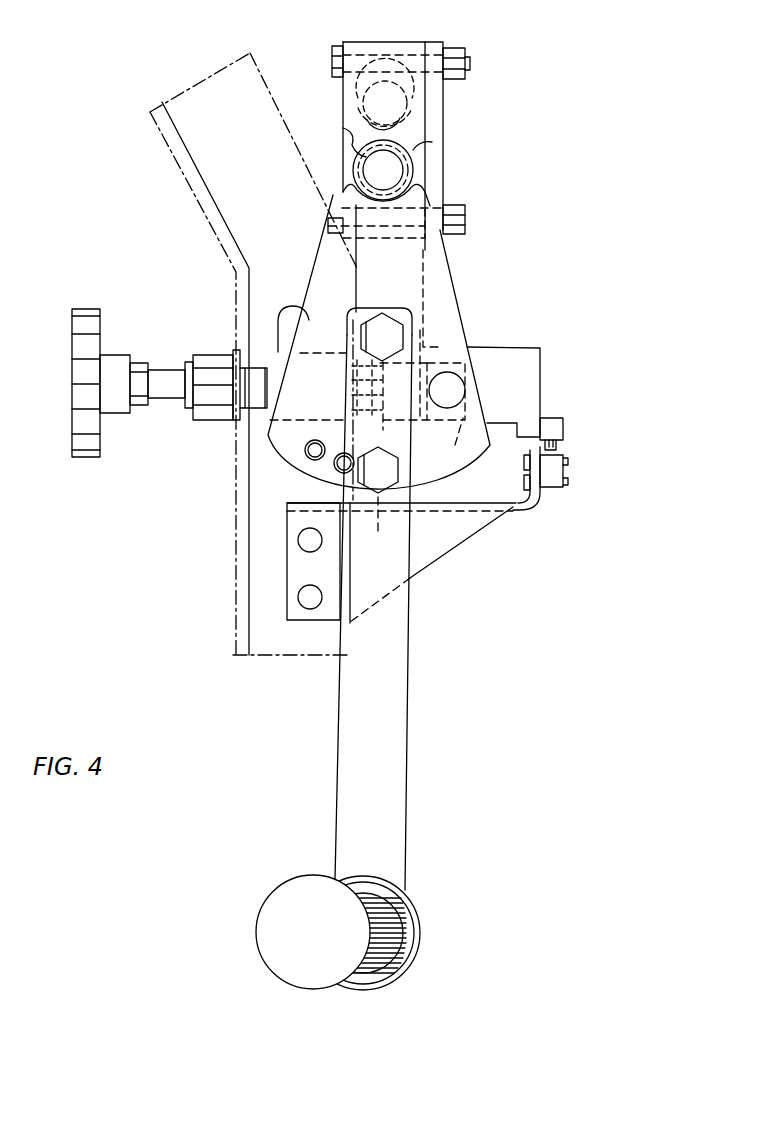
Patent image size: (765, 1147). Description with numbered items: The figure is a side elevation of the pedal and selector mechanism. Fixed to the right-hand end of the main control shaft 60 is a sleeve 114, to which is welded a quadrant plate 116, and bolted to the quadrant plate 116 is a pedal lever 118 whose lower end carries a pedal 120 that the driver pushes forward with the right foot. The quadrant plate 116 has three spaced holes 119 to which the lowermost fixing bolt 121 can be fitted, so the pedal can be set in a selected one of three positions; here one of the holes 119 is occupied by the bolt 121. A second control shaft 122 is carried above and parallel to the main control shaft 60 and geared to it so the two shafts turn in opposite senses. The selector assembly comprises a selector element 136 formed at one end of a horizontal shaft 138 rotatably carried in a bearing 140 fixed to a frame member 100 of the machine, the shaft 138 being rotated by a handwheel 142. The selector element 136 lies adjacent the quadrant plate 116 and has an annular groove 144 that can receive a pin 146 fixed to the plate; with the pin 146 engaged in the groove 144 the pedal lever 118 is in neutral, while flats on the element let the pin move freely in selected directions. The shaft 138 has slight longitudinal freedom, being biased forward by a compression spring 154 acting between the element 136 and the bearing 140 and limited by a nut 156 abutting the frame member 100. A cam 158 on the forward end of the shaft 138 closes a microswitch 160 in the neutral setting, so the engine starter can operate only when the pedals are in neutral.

The main control shaft 60 is at (372, 161).
The frame member 100 is at (233, 540).
The sleeve 114 is at (412, 151).
The quadrant plate 116 is at (455, 320).
The pedal lever 118 is at (388, 722).
The holes 119 is at (336, 466).
The pedal 120 is at (388, 925).
The fixing bolt 121 is at (381, 504).
The second control shaft 122 is at (388, 104).
The selector element 136 is at (518, 353).
The shaft 138 is at (162, 383).
The bearing 140 is at (340, 343).
The handwheel 142 is at (86, 325).
The annular groove 144 is at (451, 443).
The pin 146 is at (448, 398).
The compression spring 154 is at (352, 381).
The nut 156 is at (222, 393).
The cam 158 is at (553, 428).
The microswitch 160 is at (555, 473).